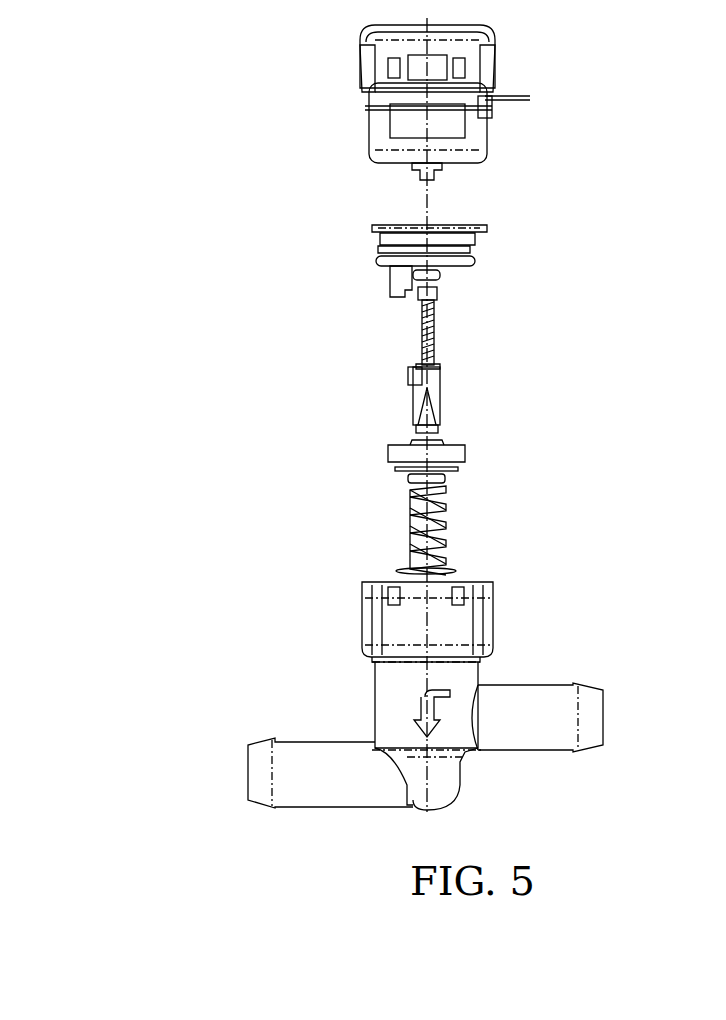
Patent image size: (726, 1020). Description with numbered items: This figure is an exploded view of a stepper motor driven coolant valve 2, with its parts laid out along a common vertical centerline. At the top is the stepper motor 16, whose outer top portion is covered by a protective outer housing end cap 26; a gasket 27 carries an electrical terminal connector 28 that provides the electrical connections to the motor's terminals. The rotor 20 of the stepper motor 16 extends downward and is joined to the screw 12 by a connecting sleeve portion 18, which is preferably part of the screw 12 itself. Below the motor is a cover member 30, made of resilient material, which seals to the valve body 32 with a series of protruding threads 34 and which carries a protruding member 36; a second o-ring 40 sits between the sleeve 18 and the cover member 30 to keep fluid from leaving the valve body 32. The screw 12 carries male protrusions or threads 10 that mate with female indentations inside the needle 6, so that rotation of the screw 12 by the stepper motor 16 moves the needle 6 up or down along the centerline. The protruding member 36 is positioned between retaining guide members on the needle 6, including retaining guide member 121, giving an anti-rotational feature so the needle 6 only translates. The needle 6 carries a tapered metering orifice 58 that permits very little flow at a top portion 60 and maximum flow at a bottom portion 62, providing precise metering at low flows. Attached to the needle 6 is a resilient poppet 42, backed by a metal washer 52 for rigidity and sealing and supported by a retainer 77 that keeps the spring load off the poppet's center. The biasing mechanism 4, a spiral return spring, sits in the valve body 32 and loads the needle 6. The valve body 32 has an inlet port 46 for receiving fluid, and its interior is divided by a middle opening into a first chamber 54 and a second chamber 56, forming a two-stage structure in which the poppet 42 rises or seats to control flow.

The valve 2 is at (158, 292).
The biasing mechanism 4 is at (440, 540).
The needle 6 is at (434, 383).
The male protrusions or threads 10 is at (420, 352).
The screw 12 is at (432, 328).
The stepper motor 16 is at (428, 123).
The connecting sleeve portion 18 is at (438, 294).
The rotor 20 is at (412, 165).
The protective outer housing end cap 26 is at (427, 58).
The gasket 27 is at (452, 103).
The electrical terminal connector 28 is at (518, 92).
The cover member 30 is at (406, 237).
The valve body 32 is at (427, 622).
The protruding threads 34 is at (455, 250).
The protruding member 36 is at (400, 280).
The second o-ring 40 is at (440, 271).
The poppet 42 is at (455, 450).
The inlet port 46 is at (607, 720).
The washer 52 is at (450, 470).
The first chamber 54 is at (537, 717).
The second chamber 56 is at (180, 775).
The metering orifice 58 is at (418, 405).
The top portion 60 is at (418, 393).
The bottom portion 62 is at (416, 428).
The retainer 77 is at (438, 478).
The retaining guide member 121 is at (413, 372).